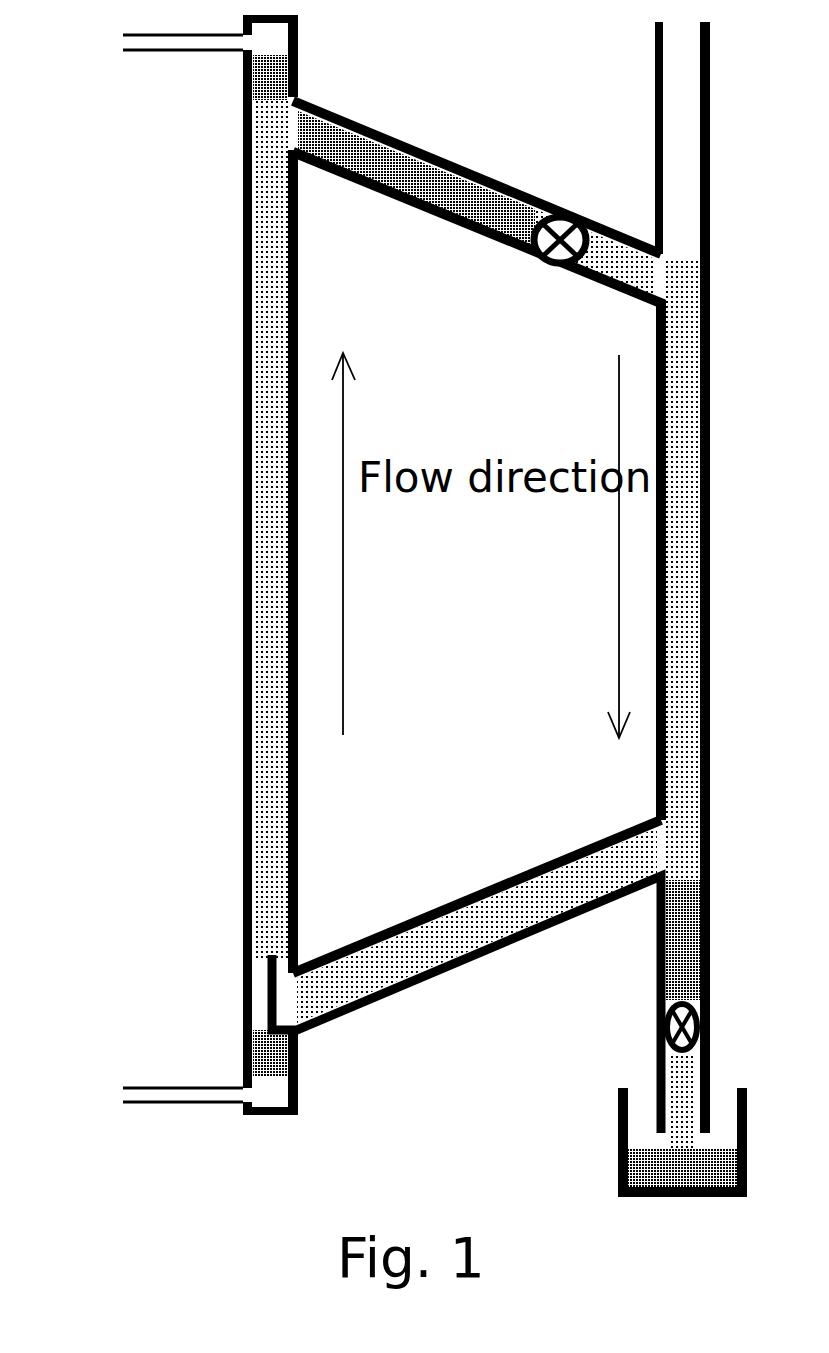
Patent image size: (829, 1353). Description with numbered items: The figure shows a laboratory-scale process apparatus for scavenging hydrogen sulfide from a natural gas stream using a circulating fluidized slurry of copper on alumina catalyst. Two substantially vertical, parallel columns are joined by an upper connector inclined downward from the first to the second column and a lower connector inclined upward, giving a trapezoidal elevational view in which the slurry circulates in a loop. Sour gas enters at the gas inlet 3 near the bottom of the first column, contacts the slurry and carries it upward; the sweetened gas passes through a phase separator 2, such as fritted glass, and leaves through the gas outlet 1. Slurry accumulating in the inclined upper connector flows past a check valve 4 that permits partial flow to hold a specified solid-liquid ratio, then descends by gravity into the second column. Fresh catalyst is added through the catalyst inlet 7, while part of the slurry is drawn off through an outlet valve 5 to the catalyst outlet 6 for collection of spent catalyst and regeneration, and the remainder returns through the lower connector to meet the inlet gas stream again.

The gas outlet 1 is at (177, 43).
The phase separator 2 is at (247, 78).
The gas inlet 3 is at (159, 1095).
The check valve 4 is at (568, 208).
The outlet valve 5 is at (657, 1033).
The catalyst outlet 6 is at (680, 1110).
The catalyst inlet 7 is at (683, 95).